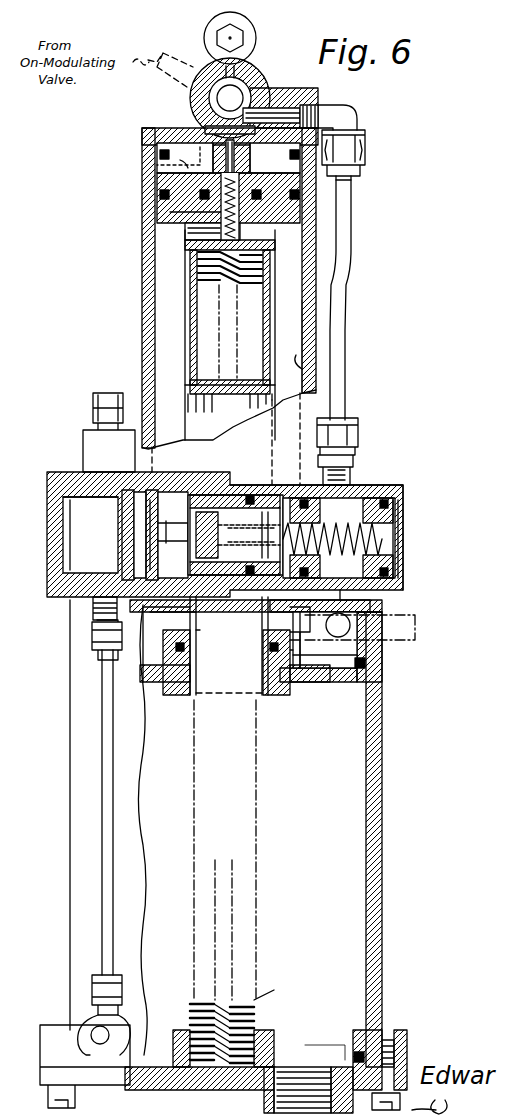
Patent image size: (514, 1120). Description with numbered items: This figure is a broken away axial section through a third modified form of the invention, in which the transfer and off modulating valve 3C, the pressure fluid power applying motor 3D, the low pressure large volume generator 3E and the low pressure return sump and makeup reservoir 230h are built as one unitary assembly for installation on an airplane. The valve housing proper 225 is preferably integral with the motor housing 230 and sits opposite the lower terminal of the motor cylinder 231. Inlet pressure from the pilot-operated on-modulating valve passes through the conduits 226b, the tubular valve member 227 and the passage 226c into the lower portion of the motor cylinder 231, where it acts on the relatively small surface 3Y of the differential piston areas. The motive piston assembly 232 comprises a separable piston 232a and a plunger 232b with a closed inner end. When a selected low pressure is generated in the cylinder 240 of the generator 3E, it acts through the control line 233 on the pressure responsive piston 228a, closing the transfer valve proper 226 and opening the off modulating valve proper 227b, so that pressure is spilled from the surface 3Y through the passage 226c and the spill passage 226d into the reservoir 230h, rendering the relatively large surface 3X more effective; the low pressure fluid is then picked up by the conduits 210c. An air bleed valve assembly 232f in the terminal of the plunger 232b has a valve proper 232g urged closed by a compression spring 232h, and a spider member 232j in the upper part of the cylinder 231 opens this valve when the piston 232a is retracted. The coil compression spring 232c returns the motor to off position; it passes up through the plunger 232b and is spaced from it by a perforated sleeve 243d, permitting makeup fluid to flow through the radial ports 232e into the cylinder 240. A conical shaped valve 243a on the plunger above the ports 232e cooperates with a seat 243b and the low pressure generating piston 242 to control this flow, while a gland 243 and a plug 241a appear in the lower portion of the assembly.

The spider member 232j is at (195, 128).
The air bleed valve assembly 232f is at (142, 136).
The relatively large surface 3X is at (200, 157).
The valve proper 232g is at (200, 182).
The compression spring 232h is at (170, 212).
The coil compression spring 232c is at (198, 265).
The motive piston assembly 232 is at (290, 257).
The relatively small surface 3Y is at (142, 241).
The pressure fluid power applying motor 3D is at (140, 319).
The perforated sleeve 243d is at (185, 382).
The separable piston 232a is at (310, 218).
The plunger 232b is at (346, 285).
The conduits 226b is at (344, 318).
The motor housing 230 is at (305, 352).
The motor cylinder 231 is at (302, 370).
The transfer and off modulating valve 3C is at (405, 537).
The transfer valve proper 226 is at (196, 500).
The off modulating valve proper 227b is at (265, 505).
The tubular valve member 227 is at (320, 517).
The valve housing proper 225 is at (400, 487).
The pressure responsive piston 228a is at (126, 525).
The low pressure return sump and makeup reservoir 230h is at (378, 599).
The low pressure large volume generating piston 242 is at (378, 654).
The conduits 210c is at (420, 627).
The gland 243 is at (268, 700).
The passage 226c is at (232, 600).
The radial ports 232e is at (264, 638).
The spill passage 226d is at (306, 646).
The conical shaped valve 243a is at (292, 652).
The seat 243b is at (196, 655).
The control line 233 is at (106, 750).
The low pressure large volume generator 3E is at (385, 793).
The cylinder 240 is at (382, 876).
The plug 241a is at (302, 1064).